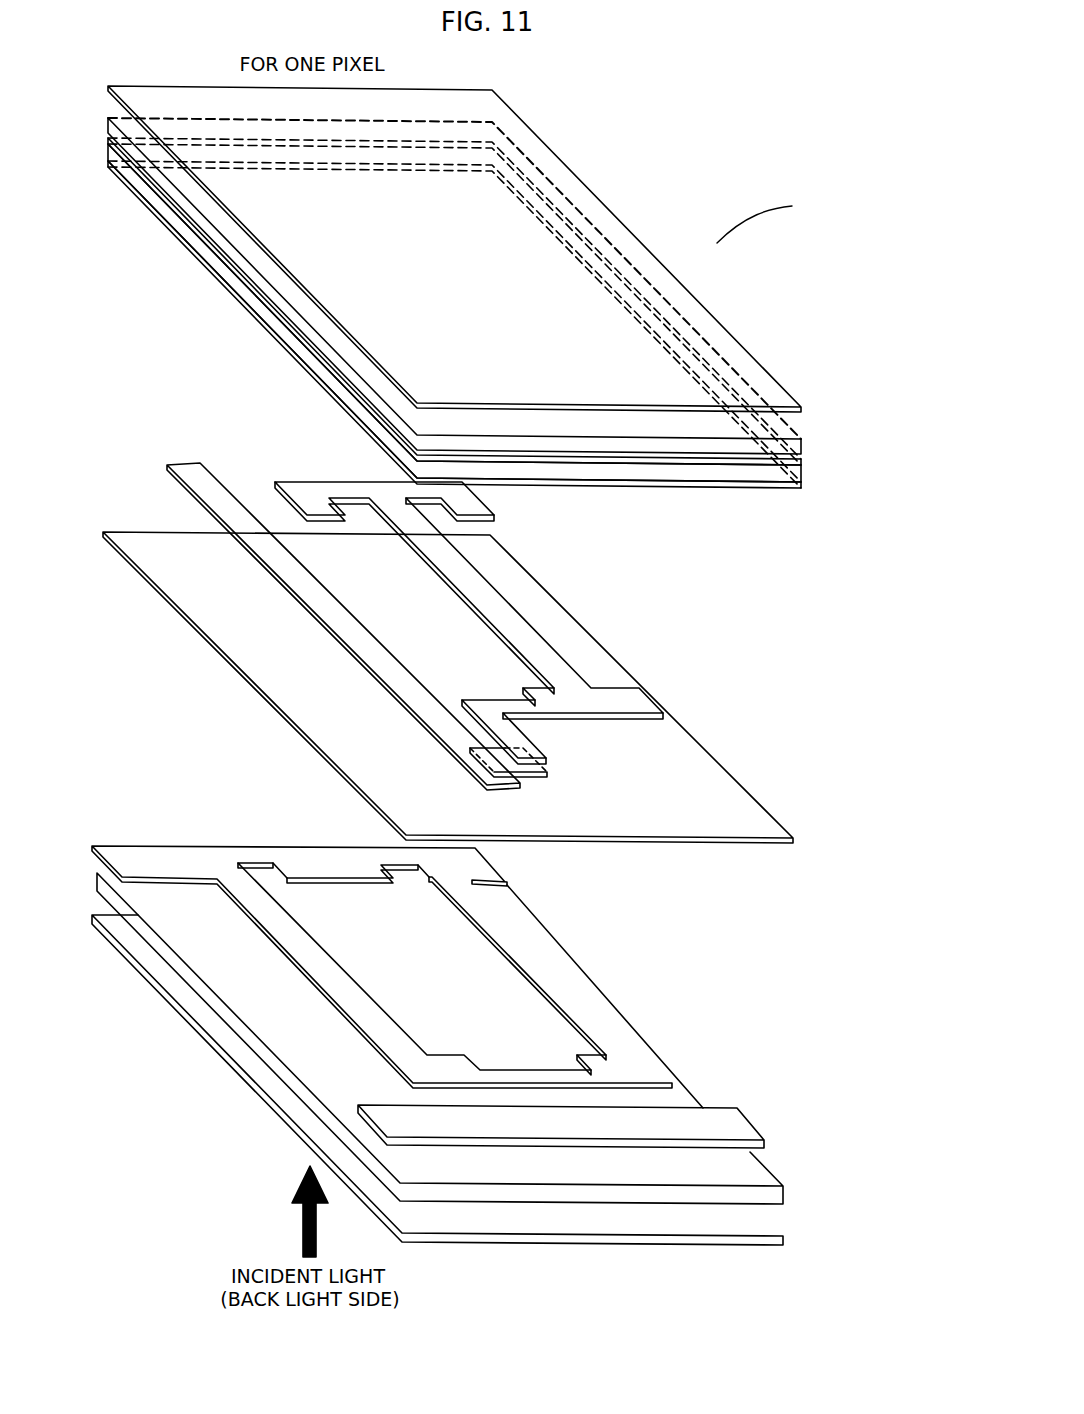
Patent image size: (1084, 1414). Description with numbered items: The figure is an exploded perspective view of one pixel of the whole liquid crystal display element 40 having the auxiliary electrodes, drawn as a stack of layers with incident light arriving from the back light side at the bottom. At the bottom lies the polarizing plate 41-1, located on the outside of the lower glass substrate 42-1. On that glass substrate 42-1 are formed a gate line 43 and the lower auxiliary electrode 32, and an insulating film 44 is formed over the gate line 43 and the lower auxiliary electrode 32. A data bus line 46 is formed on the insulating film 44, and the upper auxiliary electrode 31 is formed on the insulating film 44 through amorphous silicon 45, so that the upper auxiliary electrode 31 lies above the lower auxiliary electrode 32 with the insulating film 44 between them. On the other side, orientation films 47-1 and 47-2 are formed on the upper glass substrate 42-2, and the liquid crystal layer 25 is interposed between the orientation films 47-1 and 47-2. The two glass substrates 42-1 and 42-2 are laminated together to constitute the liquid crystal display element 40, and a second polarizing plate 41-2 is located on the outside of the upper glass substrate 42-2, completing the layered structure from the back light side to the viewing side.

The liquid crystal display element 40 is at (822, 203).
The polarizing plate 41-2 is at (796, 396).
The glass substrate 42-2 is at (800, 437).
The orientation film 47-1 is at (800, 457).
The liquid crystal layer 25 is at (800, 471).
The orientation film 47-2 is at (800, 483).
The insulating film 44 is at (791, 833).
The data bus line 46 is at (183, 466).
The upper auxiliary electrode 31 is at (640, 693).
The amorphous silicon 45 is at (548, 771).
The lower auxiliary electrode 32 is at (650, 1076).
The glass substrate 42-1 is at (785, 1192).
The gate line 43 is at (745, 1130).
The polarizing plate 41-1 is at (788, 1242).